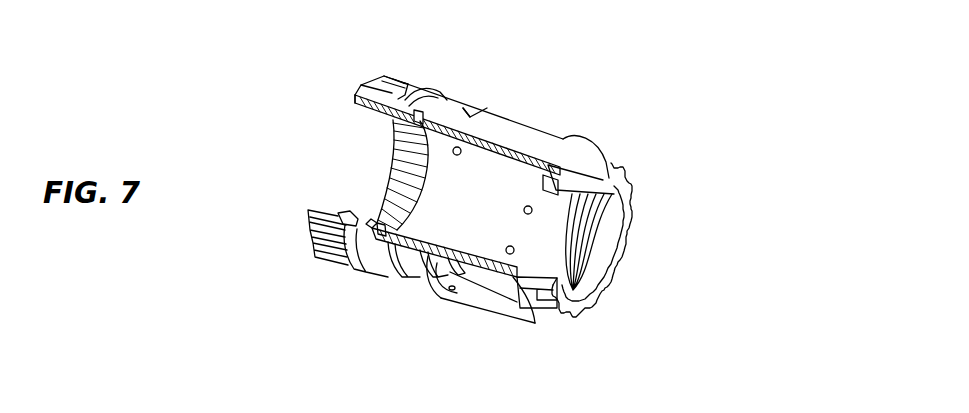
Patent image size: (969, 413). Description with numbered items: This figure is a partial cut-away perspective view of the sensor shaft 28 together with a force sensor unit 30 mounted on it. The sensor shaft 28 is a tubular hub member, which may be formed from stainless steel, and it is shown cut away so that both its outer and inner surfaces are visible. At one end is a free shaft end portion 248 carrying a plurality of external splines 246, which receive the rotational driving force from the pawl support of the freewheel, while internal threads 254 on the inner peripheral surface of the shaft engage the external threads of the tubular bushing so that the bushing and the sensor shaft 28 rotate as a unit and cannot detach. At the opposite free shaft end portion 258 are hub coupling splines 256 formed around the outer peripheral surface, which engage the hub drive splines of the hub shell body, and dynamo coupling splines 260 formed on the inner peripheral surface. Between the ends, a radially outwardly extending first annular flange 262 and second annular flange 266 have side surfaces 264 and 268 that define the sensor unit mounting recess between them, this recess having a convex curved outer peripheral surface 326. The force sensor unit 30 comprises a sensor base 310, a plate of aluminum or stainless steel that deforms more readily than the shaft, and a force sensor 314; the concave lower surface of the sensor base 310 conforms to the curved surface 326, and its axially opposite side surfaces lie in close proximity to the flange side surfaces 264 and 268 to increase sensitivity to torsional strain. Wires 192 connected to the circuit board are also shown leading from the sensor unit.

The sensor shaft 28 is at (305, 286).
The force sensor unit 30 is at (478, 64).
The wires 192 is at (470, 115).
The external splines 246 is at (616, 182).
The free shaft end portion 248 is at (617, 281).
The internal threads 254 is at (599, 238).
The hub coupling splines 256 is at (385, 77).
The opposite free shaft end portion 258 is at (346, 79).
The dynamo coupling splines 260 is at (398, 188).
The first annular flange 262 is at (563, 137).
The side surface 264 is at (441, 291).
The second annular flange 266 is at (356, 273).
The side surface 268 is at (372, 219).
The sensor base 310 is at (519, 118).
The force sensor 314 is at (473, 112).
The convex curved outer peripheral surface 326 is at (403, 292).